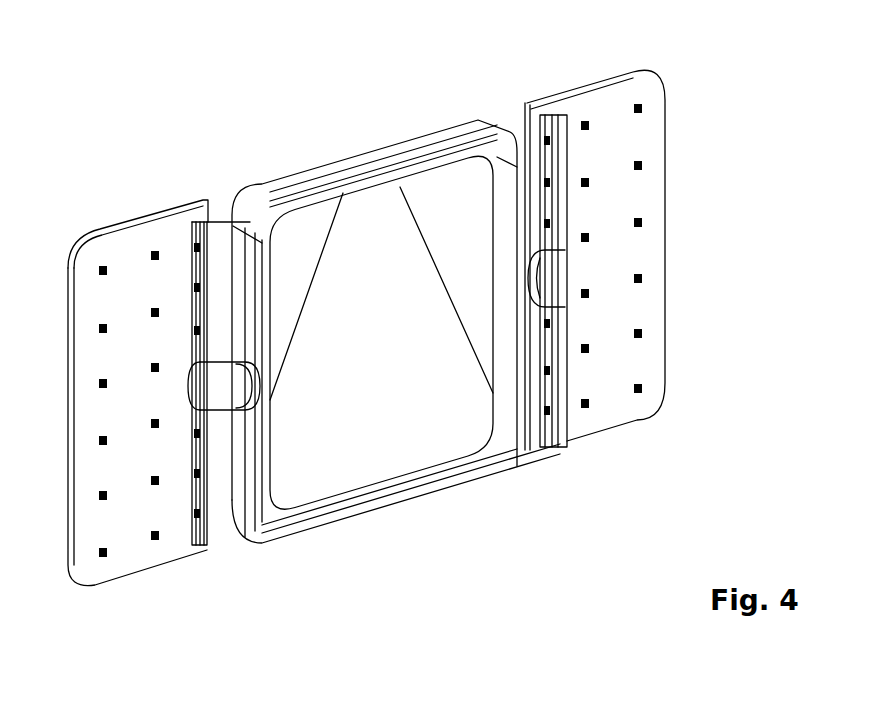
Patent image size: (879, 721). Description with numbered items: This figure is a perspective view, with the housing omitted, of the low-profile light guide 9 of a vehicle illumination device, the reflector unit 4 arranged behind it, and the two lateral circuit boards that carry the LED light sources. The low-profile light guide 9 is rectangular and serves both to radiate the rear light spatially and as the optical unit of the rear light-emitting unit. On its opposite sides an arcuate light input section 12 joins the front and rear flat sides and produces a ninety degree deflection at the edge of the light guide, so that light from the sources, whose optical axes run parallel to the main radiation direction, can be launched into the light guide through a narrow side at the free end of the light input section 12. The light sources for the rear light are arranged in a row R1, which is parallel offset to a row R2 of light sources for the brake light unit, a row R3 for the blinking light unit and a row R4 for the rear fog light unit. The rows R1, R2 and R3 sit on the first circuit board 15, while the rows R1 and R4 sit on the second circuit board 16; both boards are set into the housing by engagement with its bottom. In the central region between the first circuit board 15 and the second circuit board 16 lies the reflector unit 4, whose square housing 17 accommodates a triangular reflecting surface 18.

The reflector unit 4 is at (302, 148).
The low-profile light guide 9 is at (525, 132).
The light input section 12 is at (223, 235).
The first circuit board 15 is at (143, 560).
The second circuit board 16 is at (608, 415).
The square housing 17 is at (348, 167).
The triangular reflecting surface 18 is at (417, 227).
The row of light sources for the rear light-emitting unit R1 is at (197, 216).
The row of light sources for the brake light unit R2 is at (100, 250).
The row of light sources for the blinking light unit R3 is at (155, 220).
The row of light sources for the rear fog light unit R4 is at (638, 84).